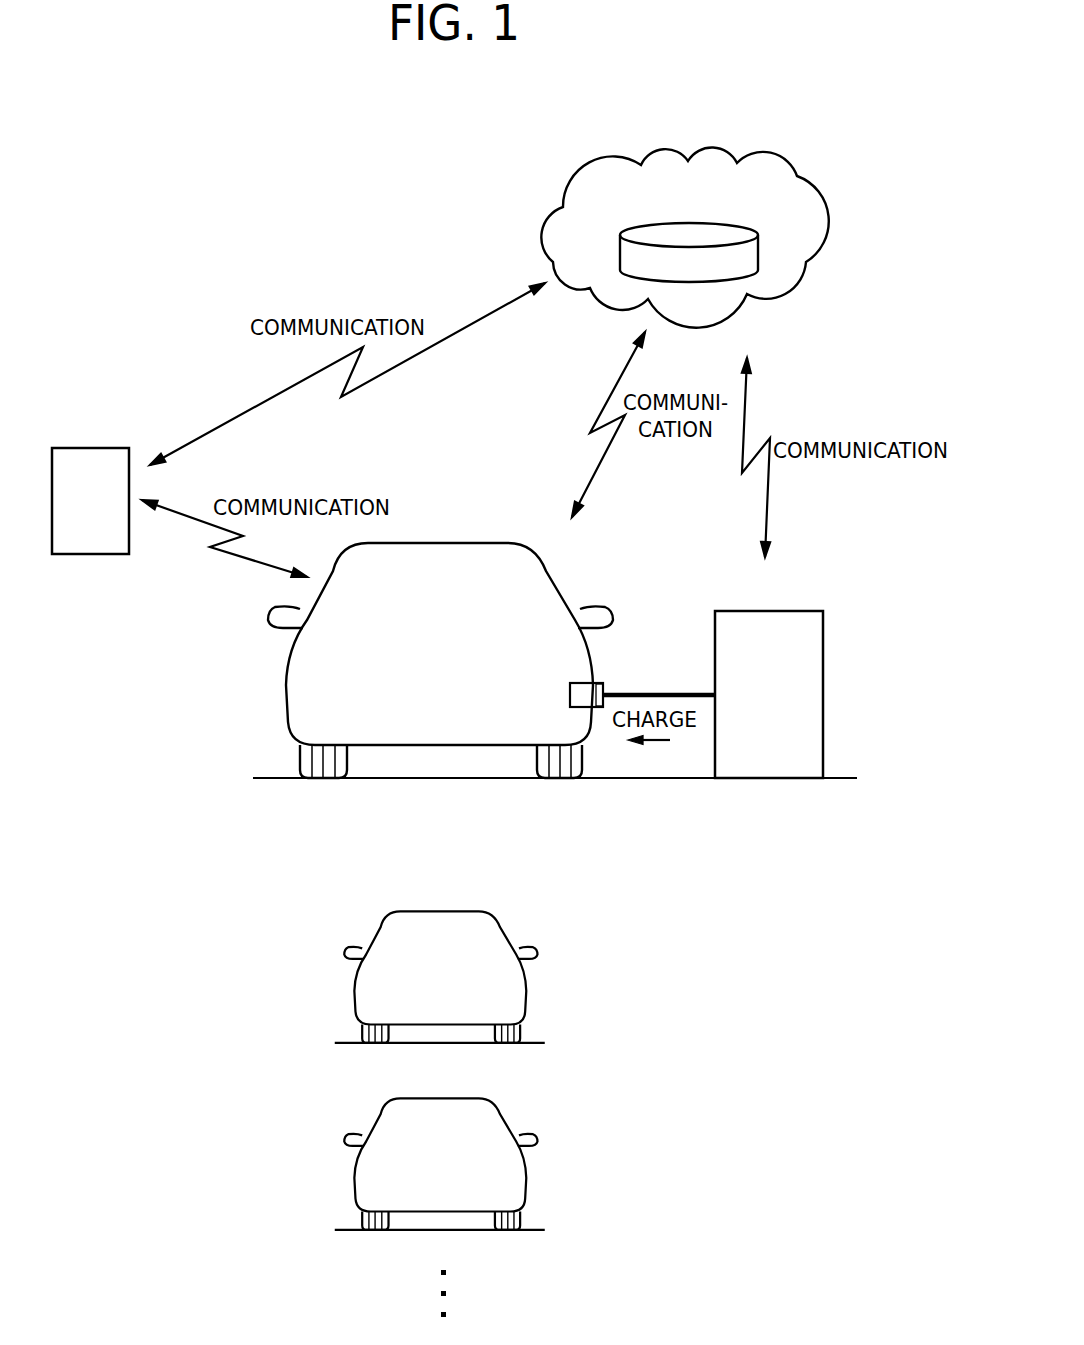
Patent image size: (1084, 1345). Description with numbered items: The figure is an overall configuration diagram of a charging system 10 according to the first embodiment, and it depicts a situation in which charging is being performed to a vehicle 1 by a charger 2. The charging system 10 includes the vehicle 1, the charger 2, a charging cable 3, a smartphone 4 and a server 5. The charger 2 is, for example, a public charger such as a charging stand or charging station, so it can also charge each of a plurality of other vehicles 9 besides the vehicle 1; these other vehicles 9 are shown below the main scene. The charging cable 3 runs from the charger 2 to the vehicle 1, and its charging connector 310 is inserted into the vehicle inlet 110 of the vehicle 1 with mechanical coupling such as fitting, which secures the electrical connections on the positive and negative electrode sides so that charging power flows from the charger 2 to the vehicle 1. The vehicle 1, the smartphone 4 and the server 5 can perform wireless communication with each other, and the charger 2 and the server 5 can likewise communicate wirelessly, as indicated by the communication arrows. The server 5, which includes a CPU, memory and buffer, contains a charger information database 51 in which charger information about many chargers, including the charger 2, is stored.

The charging system 10 is at (200, 165).
The server 5 is at (770, 155).
The charger information database 51 is at (720, 280).
The smartphone 4 is at (104, 448).
The vehicle 1 is at (478, 543).
The vehicle inlet 110 is at (578, 683).
The charging connector 310 is at (598, 683).
The charging cable 3 is at (678, 692).
The charger 2 is at (780, 611).
The vehicles 9 is at (465, 912).